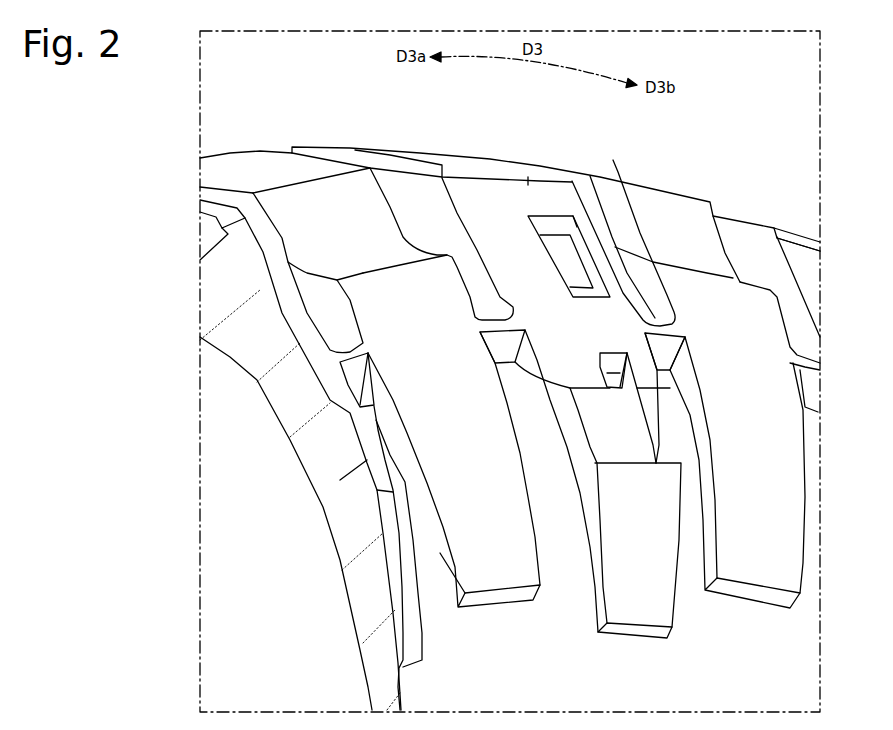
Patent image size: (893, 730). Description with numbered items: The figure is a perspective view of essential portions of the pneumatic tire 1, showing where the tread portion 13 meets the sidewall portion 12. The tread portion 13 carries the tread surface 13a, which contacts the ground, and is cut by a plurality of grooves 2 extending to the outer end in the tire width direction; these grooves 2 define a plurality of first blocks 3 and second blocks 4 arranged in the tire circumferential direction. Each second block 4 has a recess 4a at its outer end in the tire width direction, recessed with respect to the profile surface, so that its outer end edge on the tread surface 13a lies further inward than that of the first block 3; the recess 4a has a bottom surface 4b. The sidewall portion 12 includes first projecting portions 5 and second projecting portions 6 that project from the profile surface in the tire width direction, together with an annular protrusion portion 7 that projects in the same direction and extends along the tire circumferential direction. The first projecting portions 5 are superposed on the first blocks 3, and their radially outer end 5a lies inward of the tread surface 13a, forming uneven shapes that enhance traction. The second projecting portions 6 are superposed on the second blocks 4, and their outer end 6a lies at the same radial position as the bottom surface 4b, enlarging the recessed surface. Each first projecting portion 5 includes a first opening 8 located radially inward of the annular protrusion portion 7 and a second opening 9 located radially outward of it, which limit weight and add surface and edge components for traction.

The pneumatic tire 1 is at (797, 53).
The grooves 2 is at (408, 187).
The first blocks 3 is at (483, 157).
The second blocks 4 is at (257, 167).
The recesses 4a is at (353, 193).
The bottom surface 4b is at (383, 257).
The first projecting portions 5 is at (640, 632).
The outer end of the first projecting portion 5a is at (528, 163).
The second projecting portions 6 is at (502, 595).
The outer end of the second projecting portion 6a is at (362, 270).
The annular protrusion portion 7 is at (820, 393).
The first opening 8 is at (610, 353).
The second opening 9 is at (550, 255).
The sidewall portion 12 is at (800, 657).
The tread portion 13 is at (280, 113).
The tread surface 13a is at (443, 160).